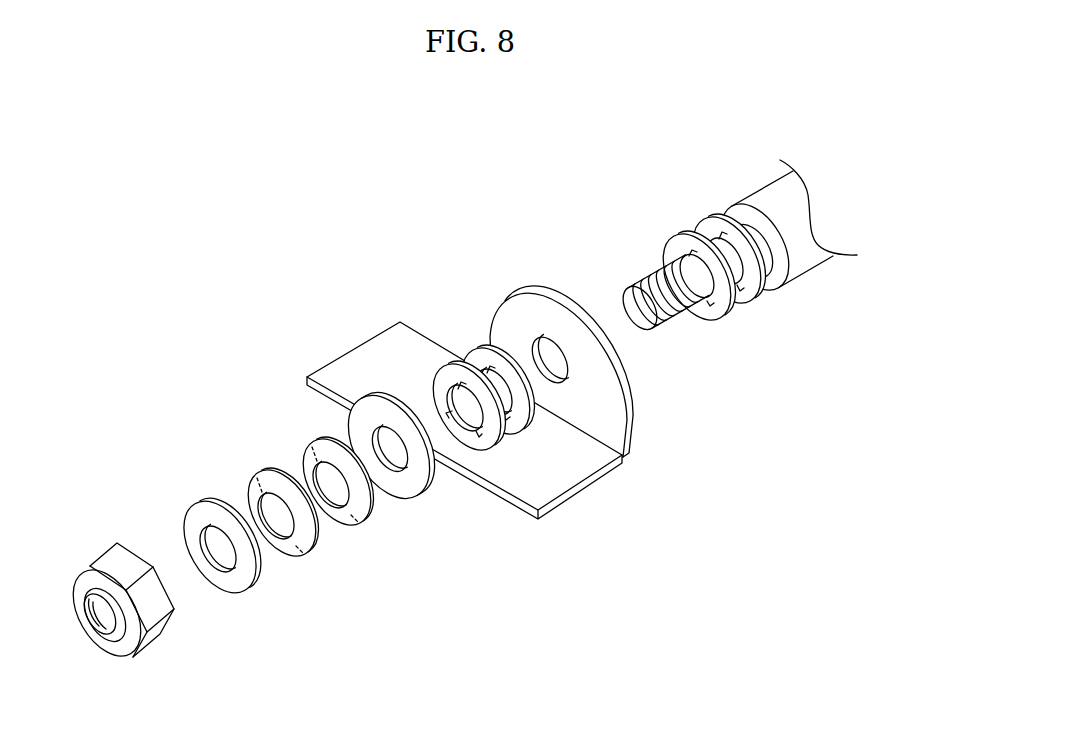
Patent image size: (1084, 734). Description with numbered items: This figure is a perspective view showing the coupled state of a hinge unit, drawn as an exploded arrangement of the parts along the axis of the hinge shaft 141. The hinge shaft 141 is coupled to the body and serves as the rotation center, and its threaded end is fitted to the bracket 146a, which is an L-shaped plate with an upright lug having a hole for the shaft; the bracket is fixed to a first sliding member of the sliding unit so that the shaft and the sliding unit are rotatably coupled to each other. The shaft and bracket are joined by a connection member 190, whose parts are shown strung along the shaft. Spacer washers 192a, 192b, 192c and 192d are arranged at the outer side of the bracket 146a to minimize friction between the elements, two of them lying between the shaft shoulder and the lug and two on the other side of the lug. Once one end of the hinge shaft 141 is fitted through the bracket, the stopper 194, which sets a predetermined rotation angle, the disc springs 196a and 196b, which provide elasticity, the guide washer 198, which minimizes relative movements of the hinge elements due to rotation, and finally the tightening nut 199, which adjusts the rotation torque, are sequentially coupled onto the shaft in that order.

The hinge shaft 141 is at (763, 195).
The bracket 146a is at (372, 357).
The connection member 190 is at (226, 419).
The spacer washer 192a is at (448, 377).
The spacer washer 192b is at (480, 357).
The spacer washer 192c is at (678, 245).
The spacer washer 192d is at (702, 229).
The stopper 194 is at (426, 483).
The disc spring 196a is at (307, 550).
The disc spring 196b is at (365, 517).
The guide washer 198 is at (245, 582).
The tightening nut 199 is at (156, 636).